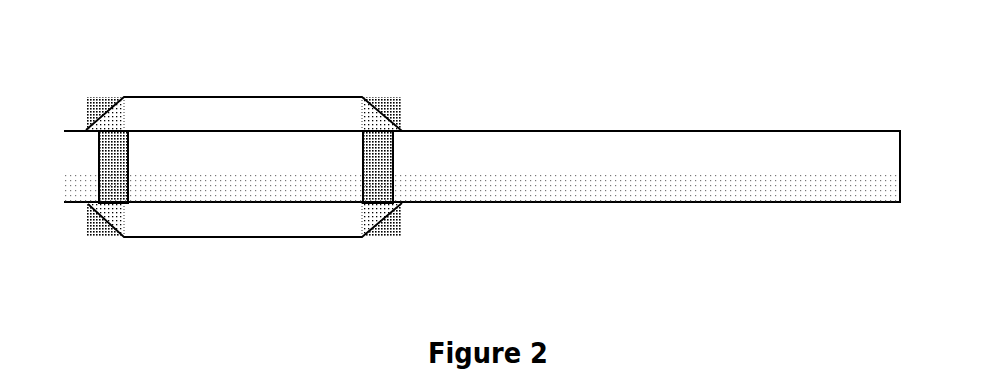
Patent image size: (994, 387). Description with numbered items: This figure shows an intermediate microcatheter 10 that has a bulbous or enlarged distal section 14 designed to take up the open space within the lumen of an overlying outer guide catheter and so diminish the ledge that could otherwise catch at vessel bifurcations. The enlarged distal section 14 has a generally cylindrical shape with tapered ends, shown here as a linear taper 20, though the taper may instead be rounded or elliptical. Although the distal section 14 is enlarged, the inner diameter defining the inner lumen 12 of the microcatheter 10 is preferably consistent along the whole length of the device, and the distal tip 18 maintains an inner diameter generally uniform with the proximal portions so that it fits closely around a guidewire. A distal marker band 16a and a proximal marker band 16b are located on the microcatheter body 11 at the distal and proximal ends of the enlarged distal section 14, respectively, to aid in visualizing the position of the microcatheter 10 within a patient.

The intermediate microcatheter 10 is at (745, 238).
The microcatheter body 11 is at (637, 205).
The inner lumen 12 is at (478, 192).
The enlarged distal section 14 is at (332, 97).
The distal marker band 16a is at (102, 203).
The proximal marker band 16b is at (385, 131).
The distal tip 18 is at (68, 130).
The linear taper 20 is at (163, 85).